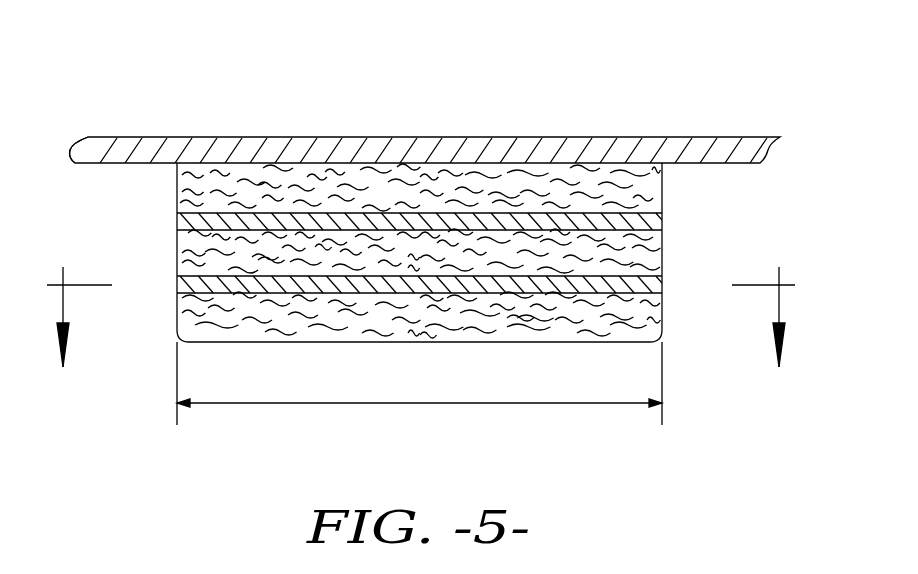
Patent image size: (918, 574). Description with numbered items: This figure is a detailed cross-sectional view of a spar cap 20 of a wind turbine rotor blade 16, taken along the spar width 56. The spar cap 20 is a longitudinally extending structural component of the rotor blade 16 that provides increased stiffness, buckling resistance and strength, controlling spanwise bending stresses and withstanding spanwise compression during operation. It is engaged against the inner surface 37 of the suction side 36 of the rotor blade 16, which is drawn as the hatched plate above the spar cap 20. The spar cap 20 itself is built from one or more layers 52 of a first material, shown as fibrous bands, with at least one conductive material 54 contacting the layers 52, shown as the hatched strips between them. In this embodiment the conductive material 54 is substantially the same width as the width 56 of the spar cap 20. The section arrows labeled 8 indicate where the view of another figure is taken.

The rotor blade 16 is at (410, 197).
The suction side 36 is at (550, 135).
The inner surface 37 is at (112, 163).
The spar cap 20 is at (687, 302).
The layers of a first material 52 is at (177, 303).
The conductive material 54 is at (662, 284).
The spar width 56 is at (440, 403).
The section line 8- 8 is at (421, 339).